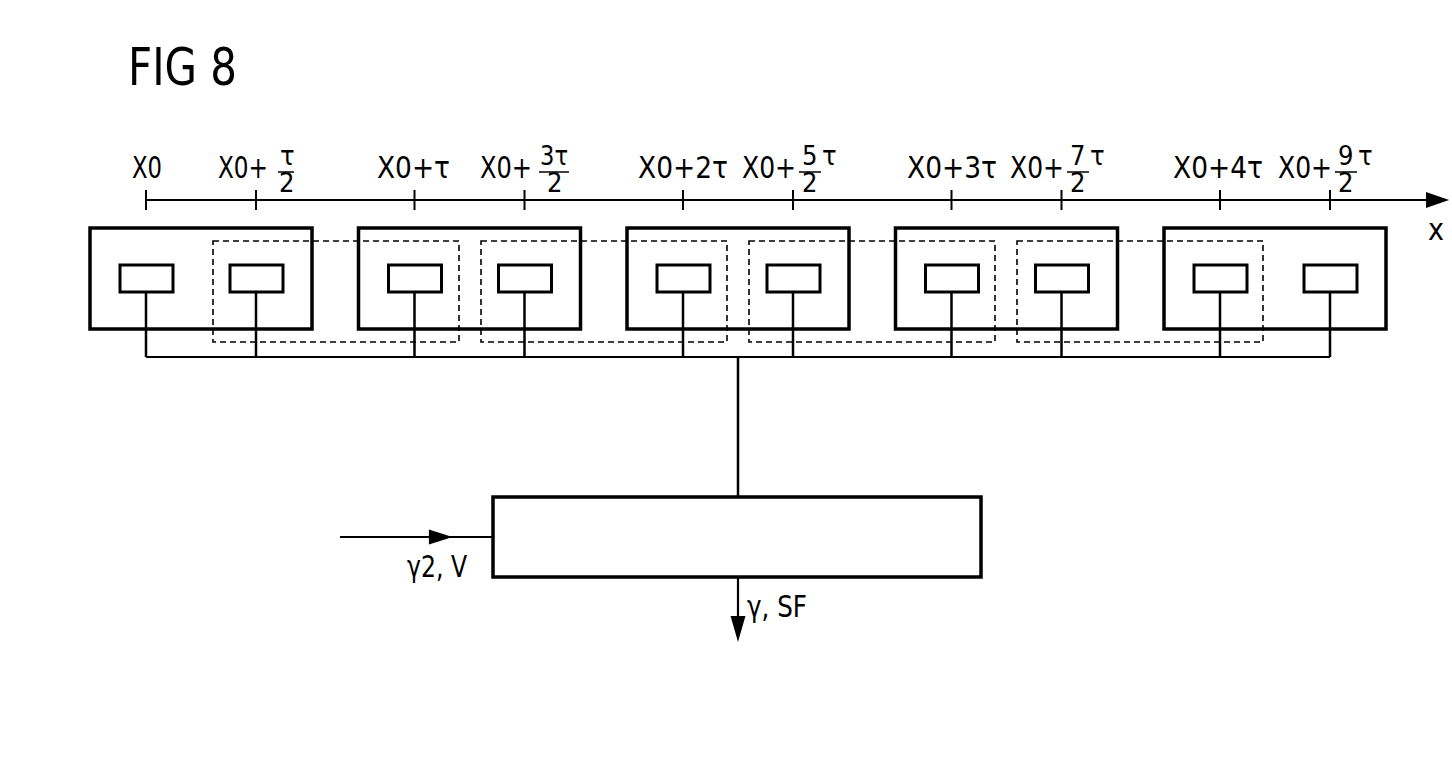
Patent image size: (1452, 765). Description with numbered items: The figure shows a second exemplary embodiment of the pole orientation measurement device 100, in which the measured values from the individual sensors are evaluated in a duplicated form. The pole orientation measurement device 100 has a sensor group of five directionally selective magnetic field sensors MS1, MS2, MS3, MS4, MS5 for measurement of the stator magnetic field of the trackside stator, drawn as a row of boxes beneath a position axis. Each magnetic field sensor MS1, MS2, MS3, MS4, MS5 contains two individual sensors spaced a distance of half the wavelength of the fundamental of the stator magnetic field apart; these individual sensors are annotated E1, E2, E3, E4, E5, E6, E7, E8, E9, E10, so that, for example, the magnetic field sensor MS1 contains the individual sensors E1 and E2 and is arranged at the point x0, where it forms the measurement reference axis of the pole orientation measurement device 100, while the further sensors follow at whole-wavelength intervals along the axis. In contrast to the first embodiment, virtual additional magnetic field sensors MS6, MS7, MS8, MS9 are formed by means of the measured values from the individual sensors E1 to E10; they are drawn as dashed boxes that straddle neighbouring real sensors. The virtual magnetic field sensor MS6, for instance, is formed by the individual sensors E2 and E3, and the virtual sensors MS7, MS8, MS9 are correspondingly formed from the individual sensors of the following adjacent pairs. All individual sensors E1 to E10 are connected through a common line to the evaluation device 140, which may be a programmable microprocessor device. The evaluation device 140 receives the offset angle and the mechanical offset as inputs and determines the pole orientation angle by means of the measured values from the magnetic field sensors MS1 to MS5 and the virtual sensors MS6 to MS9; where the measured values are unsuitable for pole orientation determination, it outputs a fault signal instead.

The individual sensor E1 is at (130, 292).
The individual sensor E2 is at (268, 292).
The individual sensor E3 is at (398, 292).
The individual sensor E4 is at (536, 292).
The individual sensor E5 is at (667, 292).
The individual sensor E6 is at (805, 292).
The individual sensor E7 is at (936, 292).
The individual sensor E8 is at (1074, 292).
The individual sensor E9 is at (1204, 292).
The individual sensor E10 is at (1342, 292).
The magnetic field sensor MS1 is at (187, 329).
The magnetic field sensor MS2 is at (472, 329).
The magnetic field sensor MS3 is at (717, 329).
The magnetic field sensor MS4 is at (1007, 329).
The magnetic field sensor MS5 is at (1307, 329).
The virtual magnetic field sensor MS6 is at (342, 342).
The virtual magnetic field sensor MS7 is at (610, 342).
The virtual magnetic field sensor MS8 is at (882, 342).
The virtual magnetic field sensor MS9 is at (1155, 342).
The evaluation device 140 is at (981, 540).
The pole orientation measurement device 100 is at (1180, 535).